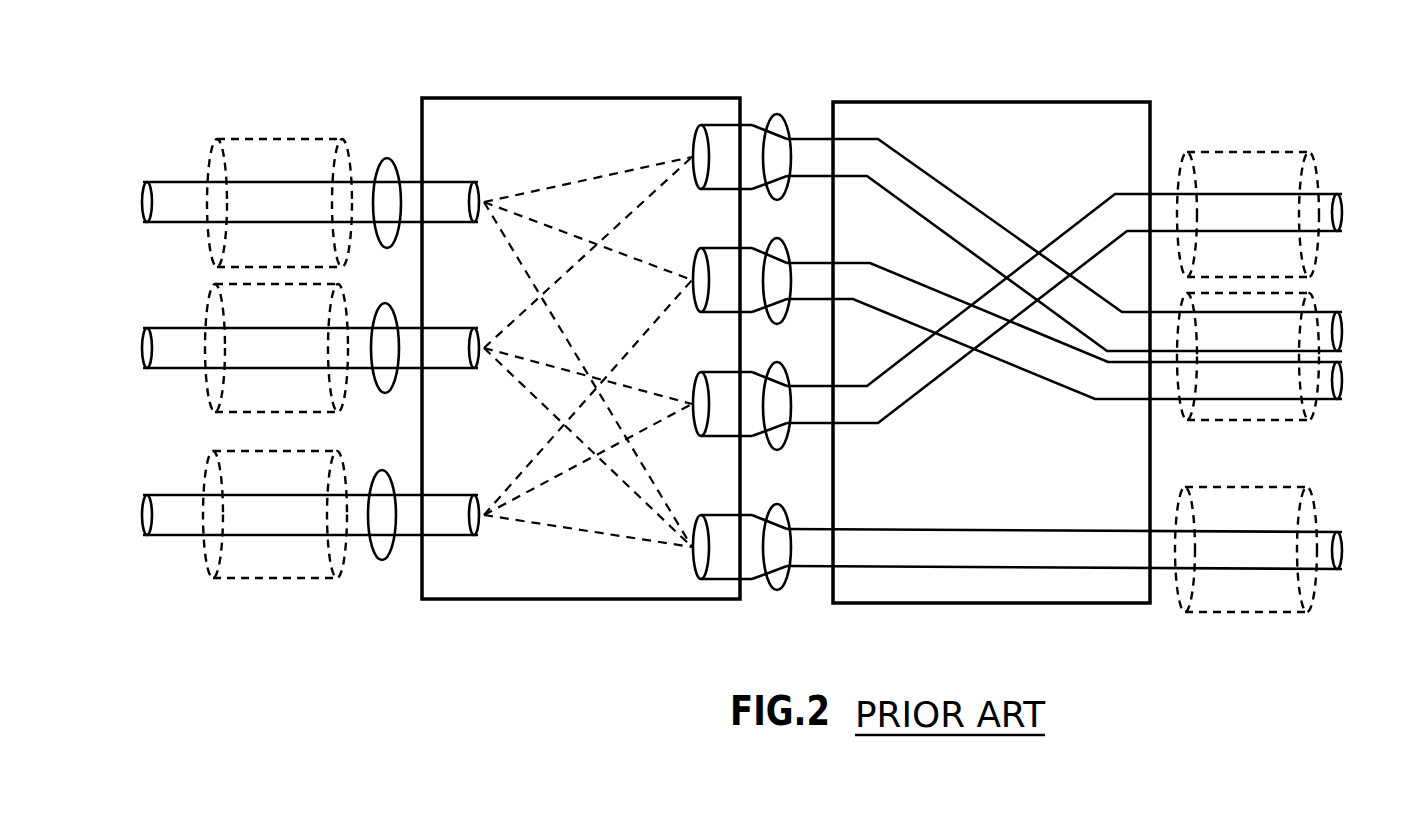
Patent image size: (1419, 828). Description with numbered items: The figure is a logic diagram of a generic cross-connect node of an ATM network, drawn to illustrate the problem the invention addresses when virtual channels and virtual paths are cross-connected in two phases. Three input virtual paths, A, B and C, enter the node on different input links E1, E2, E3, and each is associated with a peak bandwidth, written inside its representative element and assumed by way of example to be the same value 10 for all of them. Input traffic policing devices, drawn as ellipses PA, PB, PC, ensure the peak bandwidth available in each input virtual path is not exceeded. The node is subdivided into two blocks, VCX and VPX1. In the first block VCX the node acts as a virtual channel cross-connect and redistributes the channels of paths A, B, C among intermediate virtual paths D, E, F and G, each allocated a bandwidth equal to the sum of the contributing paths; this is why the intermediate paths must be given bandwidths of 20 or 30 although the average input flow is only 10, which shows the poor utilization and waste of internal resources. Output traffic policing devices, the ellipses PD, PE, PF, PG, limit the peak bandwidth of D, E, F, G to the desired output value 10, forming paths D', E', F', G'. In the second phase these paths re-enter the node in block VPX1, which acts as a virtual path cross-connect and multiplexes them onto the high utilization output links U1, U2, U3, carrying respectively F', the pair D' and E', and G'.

The peak bandwidth value 10 is at (742, 354).
The intermediate virtual path bandwidth 20 is at (740, 280).
The intermediate virtual path bandwidth 30 is at (740, 413).
The virtual channel cross-connect block VCX is at (577, 98).
The virtual path cross-connect block VPX1 is at (993, 102).
The input link E1 is at (211, 158).
The input link E2 is at (209, 305).
The input link E3 is at (207, 474).
The output link U1 is at (1319, 172).
The output link U2 is at (1319, 306).
The output link U3 is at (1317, 512).
The input traffic policing device PA is at (387, 158).
The input traffic policing device PB is at (386, 303).
The input traffic policing device PC is at (383, 470).
The output traffic policing device PD is at (780, 114).
The output traffic policing device PE is at (785, 240).
The output traffic policing device PF is at (782, 366).
The output traffic policing device PG is at (782, 508).